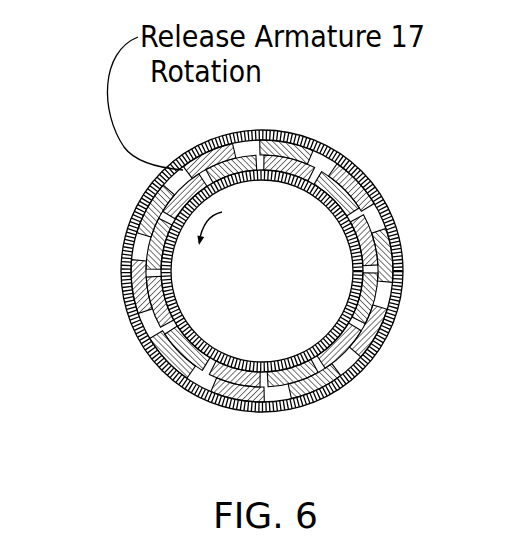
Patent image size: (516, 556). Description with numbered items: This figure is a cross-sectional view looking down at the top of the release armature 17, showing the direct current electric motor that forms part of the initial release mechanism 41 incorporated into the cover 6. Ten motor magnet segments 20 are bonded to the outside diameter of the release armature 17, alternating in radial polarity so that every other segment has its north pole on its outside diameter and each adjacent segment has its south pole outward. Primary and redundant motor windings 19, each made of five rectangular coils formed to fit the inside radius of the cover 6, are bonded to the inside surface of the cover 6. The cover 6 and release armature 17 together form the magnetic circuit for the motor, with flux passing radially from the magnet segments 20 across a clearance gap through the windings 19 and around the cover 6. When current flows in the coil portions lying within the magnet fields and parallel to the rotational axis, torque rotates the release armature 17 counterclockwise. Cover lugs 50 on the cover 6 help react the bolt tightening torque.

The cover 6 is at (150, 353).
The release armature 17 is at (210, 361).
The motor windings 19 is at (128, 298).
The motor magnet segments 20 is at (147, 250).
The initial release mechanism 41 is at (398, 211).
The cover lugs 50 is at (394, 272).